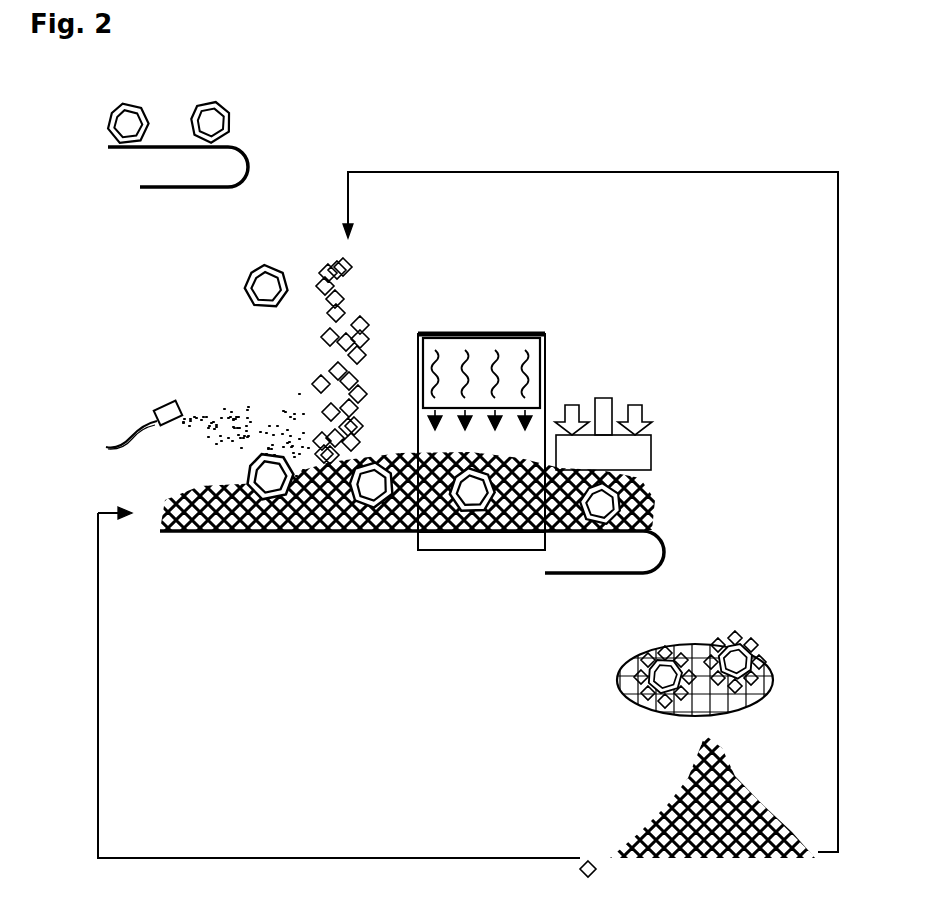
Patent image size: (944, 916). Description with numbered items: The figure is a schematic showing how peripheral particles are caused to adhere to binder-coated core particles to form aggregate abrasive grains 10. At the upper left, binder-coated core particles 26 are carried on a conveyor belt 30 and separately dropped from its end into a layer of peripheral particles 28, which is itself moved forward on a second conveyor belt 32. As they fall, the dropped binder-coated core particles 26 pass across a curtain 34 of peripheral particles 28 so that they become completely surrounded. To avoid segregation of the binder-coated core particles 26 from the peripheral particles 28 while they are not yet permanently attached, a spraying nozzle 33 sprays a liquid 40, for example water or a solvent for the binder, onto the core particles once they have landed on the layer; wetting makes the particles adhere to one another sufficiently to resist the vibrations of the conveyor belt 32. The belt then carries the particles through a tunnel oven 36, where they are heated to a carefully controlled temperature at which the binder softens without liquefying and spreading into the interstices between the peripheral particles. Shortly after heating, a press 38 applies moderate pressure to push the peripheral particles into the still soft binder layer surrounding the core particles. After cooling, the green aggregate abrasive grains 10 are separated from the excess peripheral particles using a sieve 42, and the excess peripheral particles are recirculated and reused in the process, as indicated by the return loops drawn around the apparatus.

The aggregate abrasive grains 10 is at (726, 641).
The binder-coated core particles 26 is at (145, 113).
The peripheral particles 28 is at (352, 325).
The conveyor belt 30 is at (160, 190).
The conveyor belt 32 is at (286, 535).
The spraying nozzle 33 is at (170, 403).
The curtain 34 is at (303, 367).
The tunnel oven 36 is at (548, 362).
The press 38 is at (654, 440).
The liquid 40 is at (192, 460).
The sieve 42 is at (618, 672).